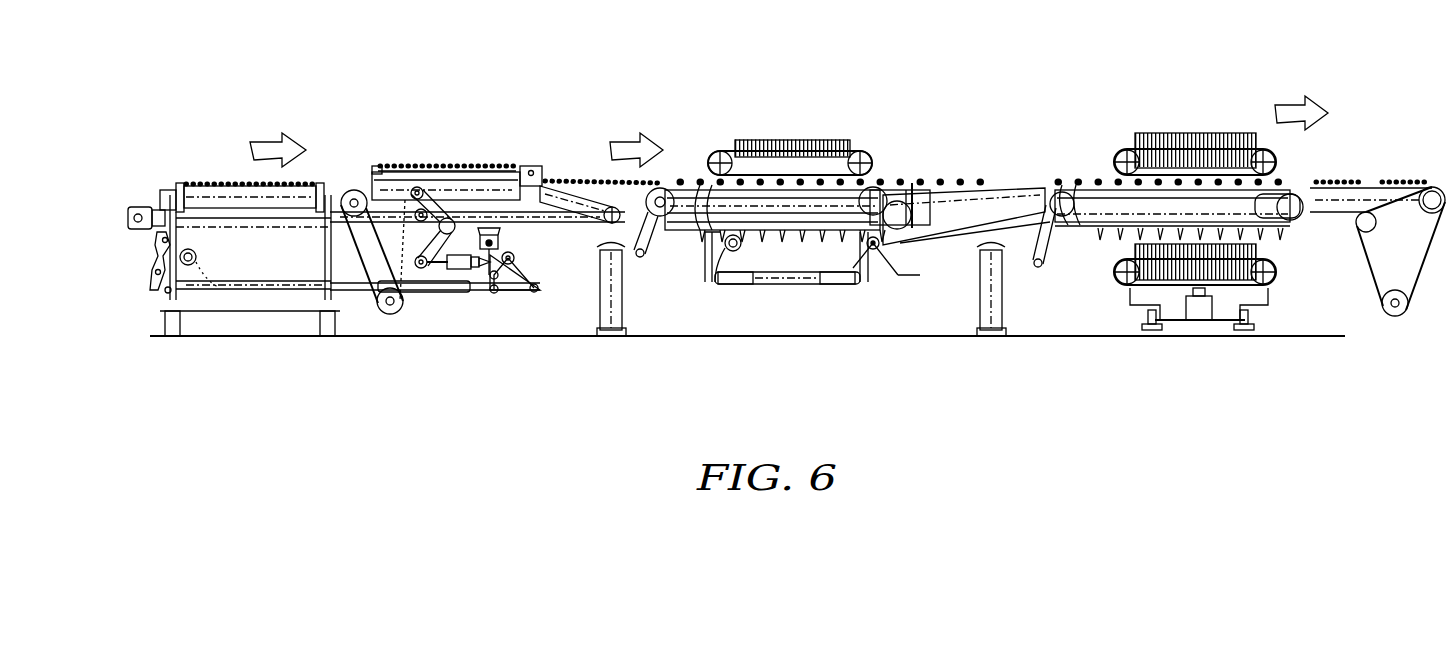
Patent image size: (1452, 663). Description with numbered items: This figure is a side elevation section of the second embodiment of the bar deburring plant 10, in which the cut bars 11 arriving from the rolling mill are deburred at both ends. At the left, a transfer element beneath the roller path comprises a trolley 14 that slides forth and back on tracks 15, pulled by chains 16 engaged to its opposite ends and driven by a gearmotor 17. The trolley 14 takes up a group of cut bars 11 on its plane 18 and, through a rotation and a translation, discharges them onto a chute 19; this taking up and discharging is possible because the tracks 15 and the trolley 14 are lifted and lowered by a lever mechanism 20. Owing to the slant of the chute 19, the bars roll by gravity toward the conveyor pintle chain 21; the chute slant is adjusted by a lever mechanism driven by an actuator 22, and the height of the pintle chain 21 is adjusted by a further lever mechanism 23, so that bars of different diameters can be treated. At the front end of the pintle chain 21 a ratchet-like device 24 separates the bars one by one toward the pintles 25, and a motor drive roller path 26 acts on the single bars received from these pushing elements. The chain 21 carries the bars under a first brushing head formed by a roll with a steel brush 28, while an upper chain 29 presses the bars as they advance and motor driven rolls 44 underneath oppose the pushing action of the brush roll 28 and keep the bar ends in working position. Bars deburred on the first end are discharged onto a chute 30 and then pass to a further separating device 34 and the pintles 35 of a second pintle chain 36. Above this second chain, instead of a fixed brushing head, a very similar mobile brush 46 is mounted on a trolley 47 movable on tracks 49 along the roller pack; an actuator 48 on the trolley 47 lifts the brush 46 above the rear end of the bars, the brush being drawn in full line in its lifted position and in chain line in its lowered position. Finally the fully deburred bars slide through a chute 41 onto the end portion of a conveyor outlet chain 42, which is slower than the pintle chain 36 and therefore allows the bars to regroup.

The bar deburring plant 10 is at (872, 92).
The cut bars 11 is at (480, 164).
The trolley 14 is at (494, 170).
The tracks 15 is at (545, 220).
The chains 16 is at (572, 196).
The gearmotor 17 is at (138, 208).
The plane 18 is at (391, 183).
The chute 19 is at (530, 170).
The lever mechanism 20 is at (160, 283).
The conveyor pintle chain 21 is at (770, 215).
The actuator 22 is at (432, 250).
The lever mechanism 23 is at (782, 284).
The separating device 24 is at (630, 238).
The pintles 25 is at (670, 232).
The motor drive roller path 26 is at (702, 222).
The steel brush roll 28 is at (793, 140).
The upper chain 29 is at (718, 155).
The chute 30 is at (868, 192).
The separating device 34 is at (1040, 246).
The pintles 35 is at (1068, 218).
The pintle chain 36 is at (1112, 222).
The chute 41 is at (1300, 206).
The conveyor outlet chain 42 is at (1368, 187).
The motor driven rolls 44 is at (825, 205).
The mobile brush 46 is at (1196, 135).
The trolley 47 is at (1252, 305).
The actuator 48 is at (1200, 321).
The tracks 49 is at (1150, 328).